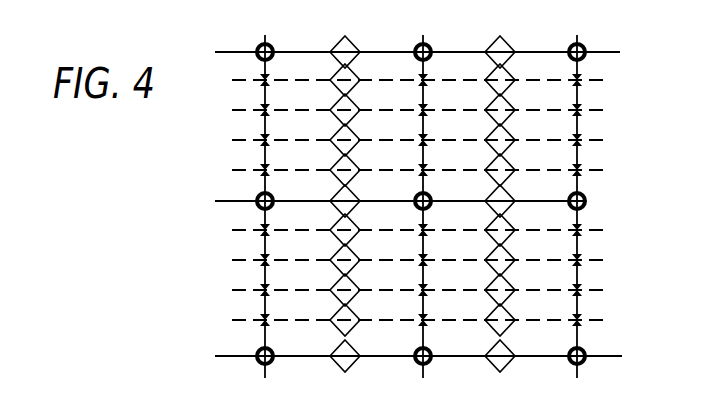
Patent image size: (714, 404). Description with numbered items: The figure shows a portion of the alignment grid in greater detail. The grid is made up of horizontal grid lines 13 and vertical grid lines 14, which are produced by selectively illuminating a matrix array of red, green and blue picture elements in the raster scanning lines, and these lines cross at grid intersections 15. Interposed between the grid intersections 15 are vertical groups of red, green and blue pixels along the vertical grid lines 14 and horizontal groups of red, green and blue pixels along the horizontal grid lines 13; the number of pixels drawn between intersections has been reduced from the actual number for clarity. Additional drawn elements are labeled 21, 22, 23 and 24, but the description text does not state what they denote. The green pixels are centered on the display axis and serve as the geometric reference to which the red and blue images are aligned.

The horizontal grid lines 13 is at (300, 141).
The vertical grid lines 14 is at (261, 287).
The grid intersections 15 is at (258, 210).
The switch element 21 is at (579, 234).
The switch element 22 is at (580, 265).
The row line 23 is at (530, 328).
The dashed row line 24 is at (448, 328).